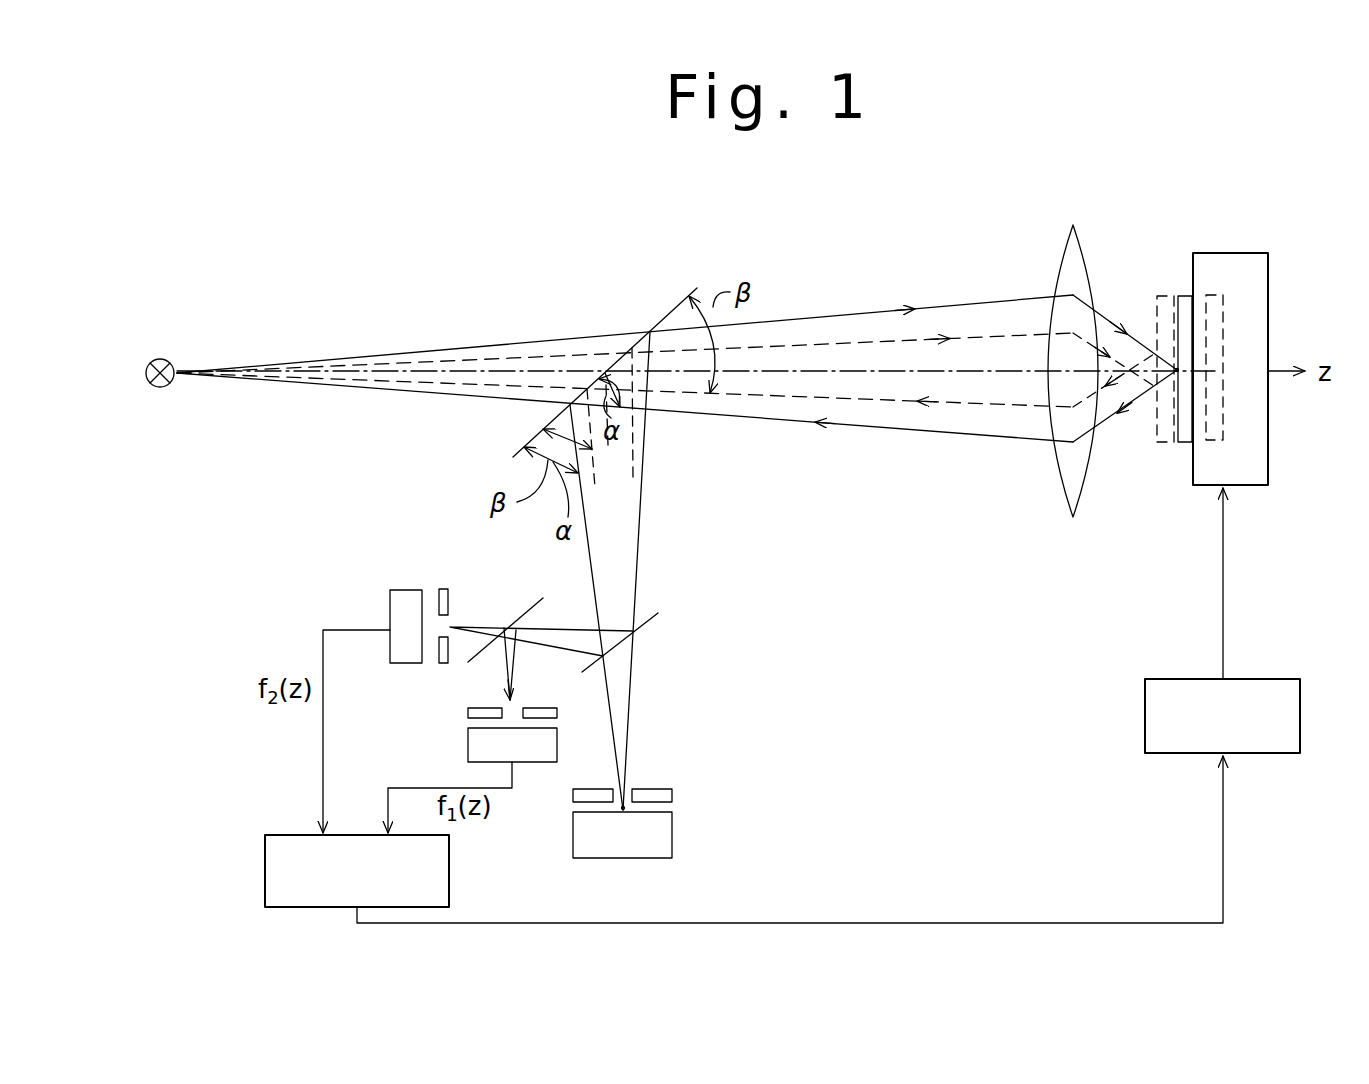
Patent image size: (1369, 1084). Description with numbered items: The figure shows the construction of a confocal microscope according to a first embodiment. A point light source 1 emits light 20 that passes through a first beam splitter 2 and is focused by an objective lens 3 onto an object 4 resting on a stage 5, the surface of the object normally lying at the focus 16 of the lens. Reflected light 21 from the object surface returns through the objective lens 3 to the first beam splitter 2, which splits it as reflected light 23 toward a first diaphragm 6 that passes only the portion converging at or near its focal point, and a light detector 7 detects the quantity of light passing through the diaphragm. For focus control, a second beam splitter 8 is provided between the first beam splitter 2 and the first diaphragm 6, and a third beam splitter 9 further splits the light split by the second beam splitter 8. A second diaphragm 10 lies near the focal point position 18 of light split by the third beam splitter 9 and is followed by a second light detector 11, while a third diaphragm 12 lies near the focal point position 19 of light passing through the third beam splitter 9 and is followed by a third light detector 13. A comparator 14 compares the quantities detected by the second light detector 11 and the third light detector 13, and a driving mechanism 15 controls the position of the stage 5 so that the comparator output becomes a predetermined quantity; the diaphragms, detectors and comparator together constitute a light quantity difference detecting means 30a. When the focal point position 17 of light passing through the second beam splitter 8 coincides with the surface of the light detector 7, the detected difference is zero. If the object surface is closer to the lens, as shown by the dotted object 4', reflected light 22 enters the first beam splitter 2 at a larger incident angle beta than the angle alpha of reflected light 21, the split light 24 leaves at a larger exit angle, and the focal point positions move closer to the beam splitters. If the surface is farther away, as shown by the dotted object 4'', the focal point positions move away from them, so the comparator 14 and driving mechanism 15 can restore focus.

The point light source 1 is at (164, 388).
The first beam splitter 2 is at (673, 306).
The objective lens 3 is at (1080, 240).
The object 4 is at (1177, 326).
The object 4' is at (1146, 332).
The object 4'' is at (1274, 348).
The stage 5 is at (1248, 253).
The first diaphragm 6 is at (672, 795).
The light detector 7 is at (673, 846).
The second beam splitter 8 is at (648, 625).
The third beam splitter 9 is at (528, 608).
The second diaphragm 10 is at (468, 713).
The second light detector 11 is at (468, 745).
The third diaphragm 12 is at (443, 589).
The third light detector 13 is at (407, 590).
The comparator 14 is at (298, 835).
The driving mechanism 15 is at (1145, 722).
The focus 16 is at (1176, 372).
The focal point position 17 is at (632, 790).
The focal point position 18 is at (513, 702).
The focal point position 19 is at (436, 624).
The incident light 20 is at (866, 310).
The reflected light 21 is at (876, 430).
The reflected light 22 is at (963, 402).
The reflected light 23 is at (592, 553).
The reflected light 24 is at (588, 455).
The light quantity difference detecting means 30a is at (483, 860).